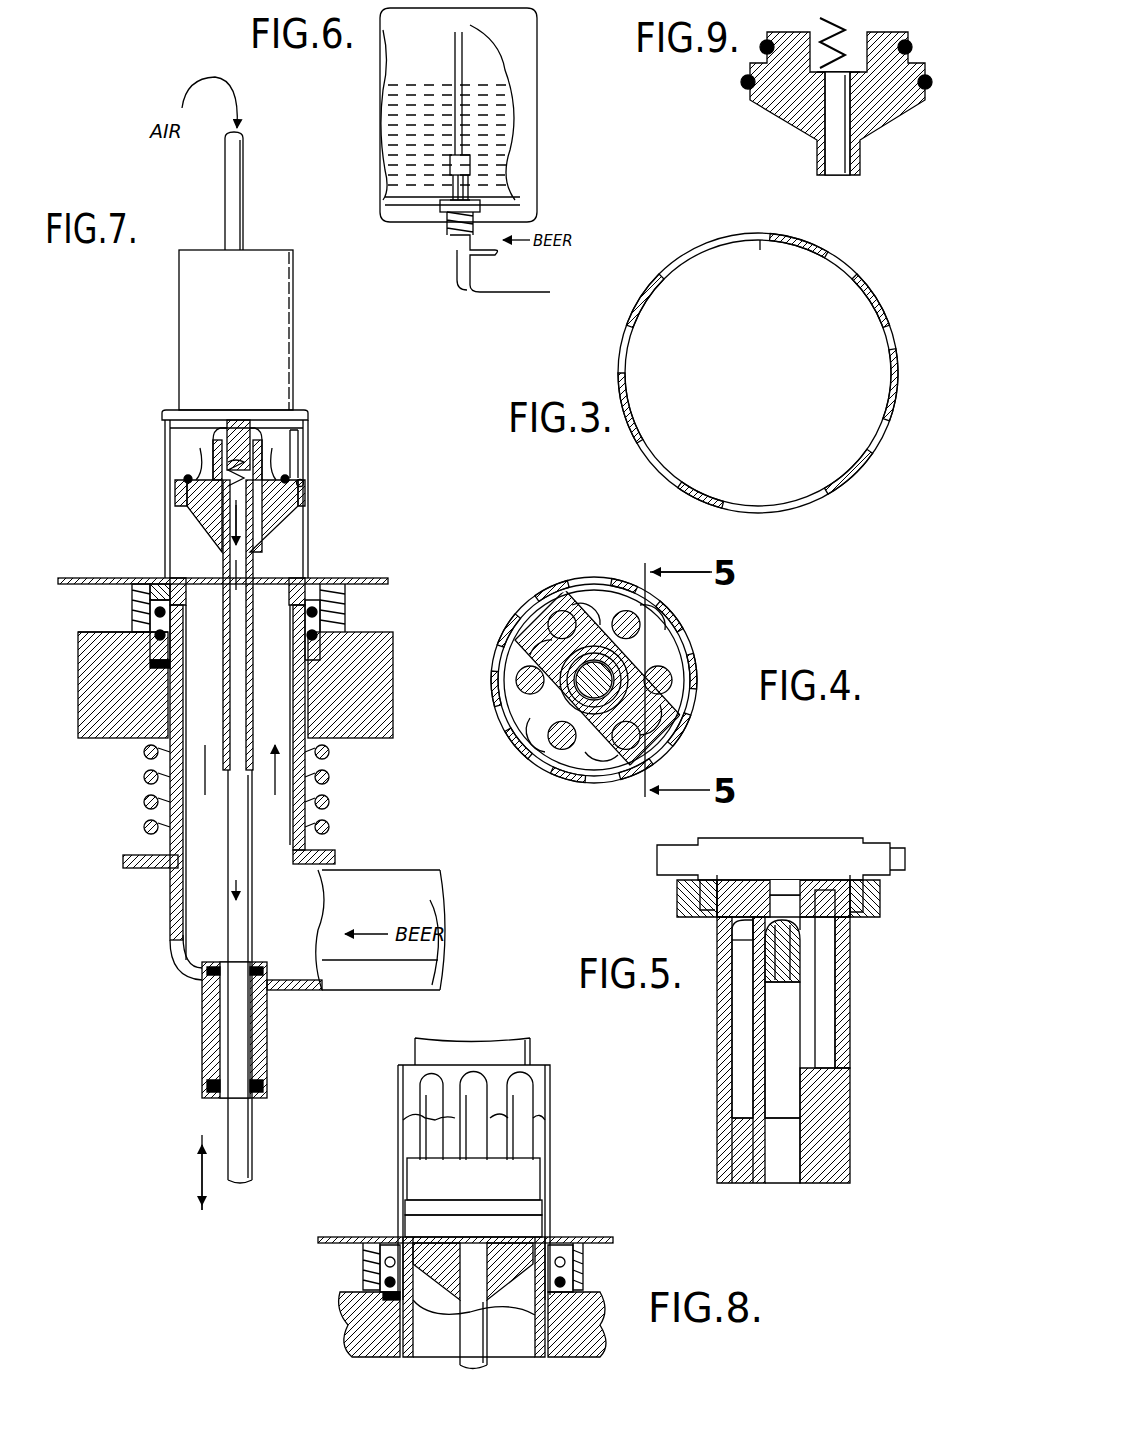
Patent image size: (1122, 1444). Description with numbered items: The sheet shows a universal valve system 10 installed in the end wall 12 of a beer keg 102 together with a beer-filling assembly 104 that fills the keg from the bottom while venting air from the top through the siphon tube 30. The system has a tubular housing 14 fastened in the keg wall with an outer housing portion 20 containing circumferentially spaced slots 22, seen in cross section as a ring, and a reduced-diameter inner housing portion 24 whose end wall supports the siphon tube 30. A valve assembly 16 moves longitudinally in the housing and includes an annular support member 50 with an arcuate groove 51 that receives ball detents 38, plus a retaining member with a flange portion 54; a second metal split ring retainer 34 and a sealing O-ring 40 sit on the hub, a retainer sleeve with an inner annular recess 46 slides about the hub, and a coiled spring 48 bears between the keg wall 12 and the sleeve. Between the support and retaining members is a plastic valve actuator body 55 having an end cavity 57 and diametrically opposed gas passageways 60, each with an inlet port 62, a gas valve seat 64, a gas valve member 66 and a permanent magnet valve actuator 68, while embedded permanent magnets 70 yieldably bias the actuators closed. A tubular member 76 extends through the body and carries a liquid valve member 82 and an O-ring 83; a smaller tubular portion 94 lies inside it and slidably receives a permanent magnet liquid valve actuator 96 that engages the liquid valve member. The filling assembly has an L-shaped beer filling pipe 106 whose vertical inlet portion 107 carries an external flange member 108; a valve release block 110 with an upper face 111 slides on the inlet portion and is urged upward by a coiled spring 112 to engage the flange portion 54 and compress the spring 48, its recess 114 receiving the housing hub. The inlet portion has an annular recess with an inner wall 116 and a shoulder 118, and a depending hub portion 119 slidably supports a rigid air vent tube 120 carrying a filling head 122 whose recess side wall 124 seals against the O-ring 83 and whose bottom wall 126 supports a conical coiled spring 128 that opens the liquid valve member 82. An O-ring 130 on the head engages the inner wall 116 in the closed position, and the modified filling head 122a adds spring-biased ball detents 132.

In FIG. 6, the universal valve system 10 is at (478, 152).
In FIG. 7, the end wall 12 is at (330, 625).
In FIG. 6, the end wall 12 is at (485, 206).
In FIG. 8, the end wall 12 is at (560, 1240).
In FIG. 7, the tubular housing 14 is at (296, 272).
In FIG. 8, the valve assembly 16 is at (530, 1122).
In FIG. 7, the outer housing portion 20 is at (300, 416).
In FIG. 3, the outer housing portion 20 is at (850, 262).
In FIG. 8, the outer housing portion 20 is at (550, 1072).
In FIG. 3, the slots 22 is at (778, 243).
In FIG. 8, the slots 22 is at (440, 1080).
In FIG. 7, the inner housing portion 24 is at (293, 350).
In FIG. 4, the inner housing portion 24 is at (612, 578).
In FIG. 8, the inner housing portion 24 is at (530, 1050).
In FIG. 7, the siphon tube 30 is at (243, 166).
In FIG. 6, the siphon tube 30 is at (462, 64).
In FIG. 7, the second metal split ring retainer 34 is at (80, 690).
In FIG. 8, the second metal split ring retainer 34 is at (570, 1328).
In FIG. 7, the ball detents 38 is at (86, 650).
In FIG. 8, the ball detents 38 is at (380, 1312).
In FIG. 7, the sealing O-ring 40 is at (312, 582).
In FIG. 8, the sealing O-ring 40 is at (375, 1258).
In FIG. 7, the inner annular recess 46 is at (132, 602).
In FIG. 7, the coiled spring 48 is at (345, 602).
In FIG. 7, the annular support member 50 is at (308, 438).
In FIG. 8, the annular support member 50 is at (525, 1172).
In FIG. 7, the groove 51 is at (304, 484).
In FIG. 8, the groove 51 is at (407, 1208).
In FIG. 7, the flange portion 54 is at (320, 640).
In FIG. 8, the flange portion 54 is at (385, 1288).
In FIG. 4, the valve actuator body 55 is at (688, 660).
In FIG. 5, the end cavity 57 is at (708, 850).
In FIG. 5, the gas passageways 60 is at (795, 1078).
In FIG. 5, the inlet port 62 is at (790, 885).
In FIG. 5, the gas valve seat 64 is at (772, 918).
In FIG. 5, the gas valve member 66 is at (790, 958).
In FIG. 4, the permanent magnet valve actuator 68 is at (516, 684).
In FIG. 5, the permanent magnet valve actuator 68 is at (785, 1058).
In FIG. 4, the permanent magnets 70 is at (520, 640).
In FIG. 5, the permanent magnets 70 is at (740, 1050).
In FIG. 4, the tubular member 76 is at (600, 740).
In FIG. 7, the liquid valve member 82 is at (234, 428).
In FIG. 7, the O-ring 83 is at (300, 498).
In FIG. 4, the tubular portion 94 is at (590, 648).
In FIG. 4, the permanent magnet liquid valve actuator 96 is at (597, 662).
In FIG. 6, the keg 102 is at (540, 158).
In FIG. 7, the beer-filling assembly 104 is at (392, 810).
In FIG. 6, the beer-filling assembly 104 is at (448, 240).
In FIG. 7, the L-shaped beer filling pipe 106 is at (428, 870).
In FIG. 7, the inlet portion 107 is at (170, 882).
In FIG. 8, the inlet portion 107 is at (440, 1340).
In FIG. 7, the external flange member 108 is at (335, 860).
In FIG. 7, the valve release block 110 is at (390, 706).
In FIG. 8, the valve release block 110 is at (560, 1290).
In FIG. 7, the upper face 111 is at (92, 632).
In FIG. 7, the coiled spring 112 is at (333, 783).
In FIG. 8, the coiled spring 112 is at (588, 1255).
In FIG. 7, the recess 114 is at (322, 662).
In FIG. 8, the recess 114 is at (383, 1296).
In FIG. 7, the inner wall 116 is at (170, 570).
In FIG. 8, the inner wall 116 is at (410, 1225).
In FIG. 7, the shoulder 118 is at (186, 612).
In FIG. 7, the hub portion 119 is at (202, 1034).
In FIG. 7, the air vent tube 120 is at (240, 914).
In FIG. 8, the air vent tube 120 is at (462, 1356).
In FIG. 7, the filling head 122 is at (190, 525).
In FIG. 8, the filling head 122 is at (525, 1262).
In FIG. 9, the modified filling head 122a is at (760, 120).
In FIG. 7, the side wall 124 is at (186, 476).
In FIG. 9, the side wall 124 is at (808, 20).
In FIG. 7, the bottom wall 126 is at (224, 520).
In FIG. 9, the bottom wall 126 is at (825, 120).
In FIG. 7, the conical coiled spring 128 is at (262, 460).
In FIG. 9, the conical coiled spring 128 is at (845, 30).
In FIG. 7, the O-ring 130 is at (290, 500).
In FIG. 9, the O-ring 130 is at (743, 86).
In FIG. 8, the O-ring 130 is at (520, 1230).
In FIG. 9, the ball detents 132 is at (910, 50).